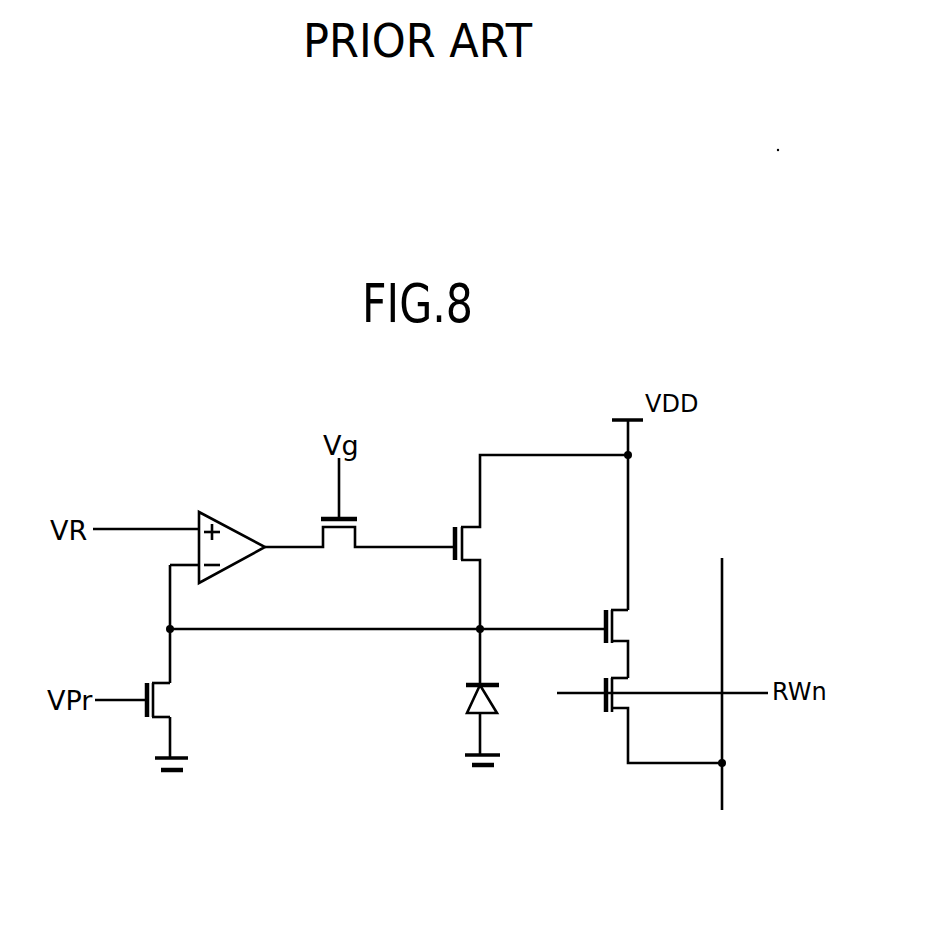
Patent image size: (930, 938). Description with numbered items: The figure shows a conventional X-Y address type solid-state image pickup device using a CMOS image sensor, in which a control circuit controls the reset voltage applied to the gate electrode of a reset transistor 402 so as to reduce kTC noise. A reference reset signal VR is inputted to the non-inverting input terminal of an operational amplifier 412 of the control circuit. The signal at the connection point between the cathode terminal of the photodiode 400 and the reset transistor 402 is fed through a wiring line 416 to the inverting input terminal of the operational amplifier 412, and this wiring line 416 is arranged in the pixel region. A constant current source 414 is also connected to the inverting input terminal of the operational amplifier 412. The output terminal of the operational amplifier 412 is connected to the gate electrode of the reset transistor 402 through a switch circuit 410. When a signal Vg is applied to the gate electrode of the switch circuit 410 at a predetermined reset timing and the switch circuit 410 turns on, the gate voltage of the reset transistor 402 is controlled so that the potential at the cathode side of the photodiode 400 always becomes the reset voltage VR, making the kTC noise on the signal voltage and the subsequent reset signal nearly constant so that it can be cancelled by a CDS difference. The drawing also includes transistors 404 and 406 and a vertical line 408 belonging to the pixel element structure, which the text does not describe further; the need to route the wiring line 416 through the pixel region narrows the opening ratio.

The photodiode 400 is at (465, 701).
The reset transistor 402 is at (478, 540).
The amplifying transistor 404 is at (627, 622).
The row select transistor 406 is at (600, 706).
The vertical signal line 408 is at (723, 576).
The switch circuit 410 is at (340, 540).
The operational amplifier 412 is at (232, 524).
The constant current source 414 is at (167, 700).
The wiring line 416 is at (420, 627).